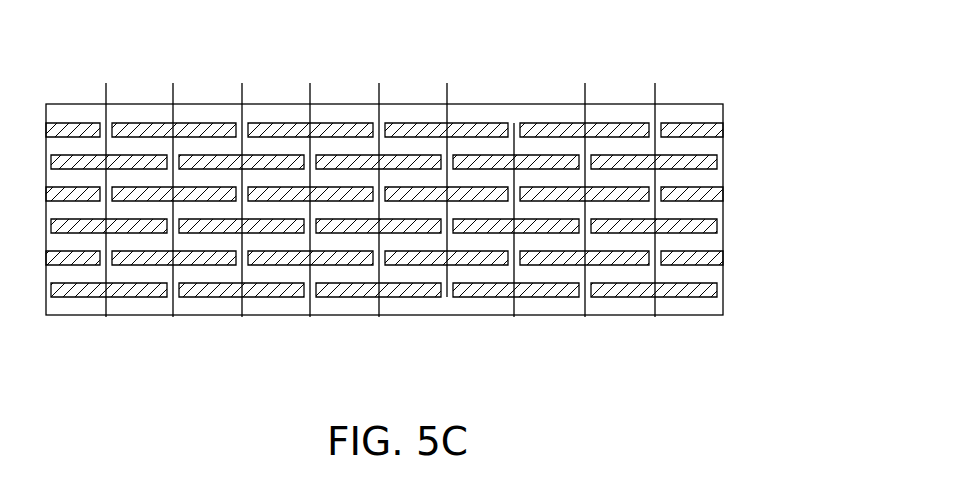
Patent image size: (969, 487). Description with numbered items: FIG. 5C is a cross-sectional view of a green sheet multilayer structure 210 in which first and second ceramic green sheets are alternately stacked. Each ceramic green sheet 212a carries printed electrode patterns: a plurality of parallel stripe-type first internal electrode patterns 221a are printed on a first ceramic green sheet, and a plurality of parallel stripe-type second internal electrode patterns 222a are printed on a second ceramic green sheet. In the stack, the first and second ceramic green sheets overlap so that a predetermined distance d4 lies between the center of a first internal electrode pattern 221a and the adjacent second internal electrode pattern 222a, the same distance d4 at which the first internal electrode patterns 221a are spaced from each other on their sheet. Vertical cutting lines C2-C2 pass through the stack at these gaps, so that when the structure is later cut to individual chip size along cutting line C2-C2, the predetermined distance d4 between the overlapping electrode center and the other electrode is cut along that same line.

The green sheet multilayer structure 210 is at (122, 31).
The stripe-type second internal electrode pattern 222a is at (692, 191).
The stripe-type first internal electrode pattern 221a is at (712, 226).
The ceramic green sheet 212a is at (707, 211).
The cutting line C2 is at (208, 203).
The predetermined distance d4 is at (525, 78).